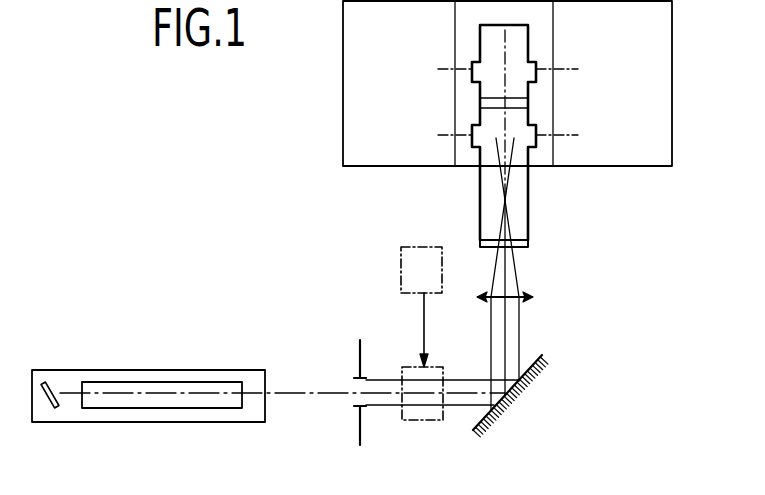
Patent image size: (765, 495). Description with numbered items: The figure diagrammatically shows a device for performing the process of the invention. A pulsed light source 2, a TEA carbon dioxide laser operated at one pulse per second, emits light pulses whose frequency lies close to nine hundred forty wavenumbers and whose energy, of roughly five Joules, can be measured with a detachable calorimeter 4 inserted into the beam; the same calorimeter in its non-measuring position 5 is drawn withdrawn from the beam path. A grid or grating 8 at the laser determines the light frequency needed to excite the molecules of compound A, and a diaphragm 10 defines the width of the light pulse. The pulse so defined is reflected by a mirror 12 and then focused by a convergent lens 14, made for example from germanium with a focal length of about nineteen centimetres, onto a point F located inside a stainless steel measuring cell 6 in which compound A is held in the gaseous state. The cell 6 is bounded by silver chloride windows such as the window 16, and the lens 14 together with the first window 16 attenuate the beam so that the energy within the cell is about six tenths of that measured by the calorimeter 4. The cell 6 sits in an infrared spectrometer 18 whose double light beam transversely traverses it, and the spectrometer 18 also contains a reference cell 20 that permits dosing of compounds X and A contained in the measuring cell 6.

The pulsed light source 2 is at (148, 370).
The detachable calorimeter 4 is at (432, 366).
The calorimeter in non-measuring position 5 is at (408, 282).
The measuring cell 6 is at (529, 228).
The grid or grating 8 is at (51, 408).
The diaphragm 10 is at (353, 377).
The mirror 12 is at (484, 421).
The convergent lens 14 is at (534, 298).
The window 16 is at (481, 246).
The infrared spectrometer 18 is at (681, 44).
The reference cell 20 is at (489, 57).
The focal point F is at (505, 200).